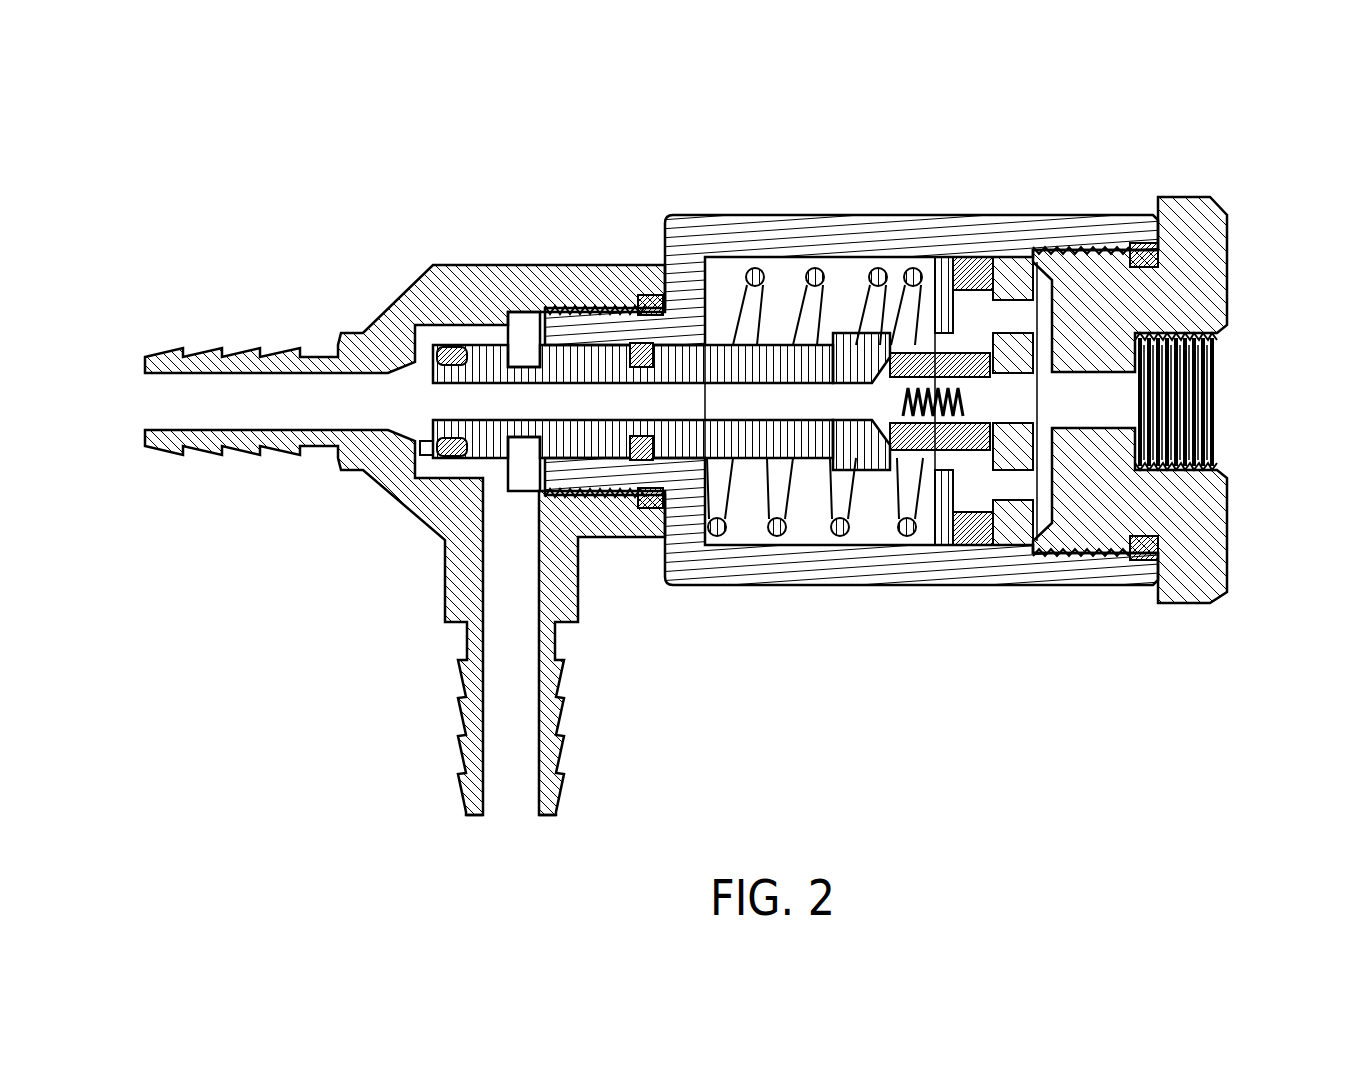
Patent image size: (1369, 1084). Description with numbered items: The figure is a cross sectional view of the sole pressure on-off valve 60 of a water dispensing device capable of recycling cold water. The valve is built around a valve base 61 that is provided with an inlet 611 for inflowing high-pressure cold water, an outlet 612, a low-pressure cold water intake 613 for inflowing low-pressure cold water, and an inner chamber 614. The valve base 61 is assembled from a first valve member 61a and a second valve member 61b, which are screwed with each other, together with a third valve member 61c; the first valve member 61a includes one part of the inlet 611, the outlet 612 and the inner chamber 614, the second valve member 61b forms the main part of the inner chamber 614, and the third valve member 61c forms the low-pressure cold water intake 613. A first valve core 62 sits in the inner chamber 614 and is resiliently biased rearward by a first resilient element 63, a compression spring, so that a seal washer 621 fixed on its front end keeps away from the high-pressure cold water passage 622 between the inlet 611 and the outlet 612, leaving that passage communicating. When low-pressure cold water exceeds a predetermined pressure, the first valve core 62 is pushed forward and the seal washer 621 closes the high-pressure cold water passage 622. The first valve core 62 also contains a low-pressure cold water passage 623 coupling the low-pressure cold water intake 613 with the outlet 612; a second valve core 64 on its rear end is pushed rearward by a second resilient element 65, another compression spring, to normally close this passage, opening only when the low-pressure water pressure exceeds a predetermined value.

The pressure on-off valve 60 is at (705, 472).
The valve base 61 is at (1194, 367).
The first valve member 61a is at (360, 502).
The second valve member 61b is at (851, 336).
The third valve member 61c is at (1203, 292).
The inlet 611 is at (515, 800).
The outlet 612 is at (167, 400).
The low-pressure cold water intake 613 is at (1215, 410).
The inner chamber 614 is at (845, 283).
The first valve core 62 is at (530, 482).
The seal washer 621 is at (430, 452).
The high-pressure cold water passage 622 is at (414, 440).
The low-pressure cold water passage 623 is at (582, 432).
The first resilient element 63 is at (832, 522).
The second valve core 64 is at (893, 474).
The second resilient element 65 is at (984, 514).